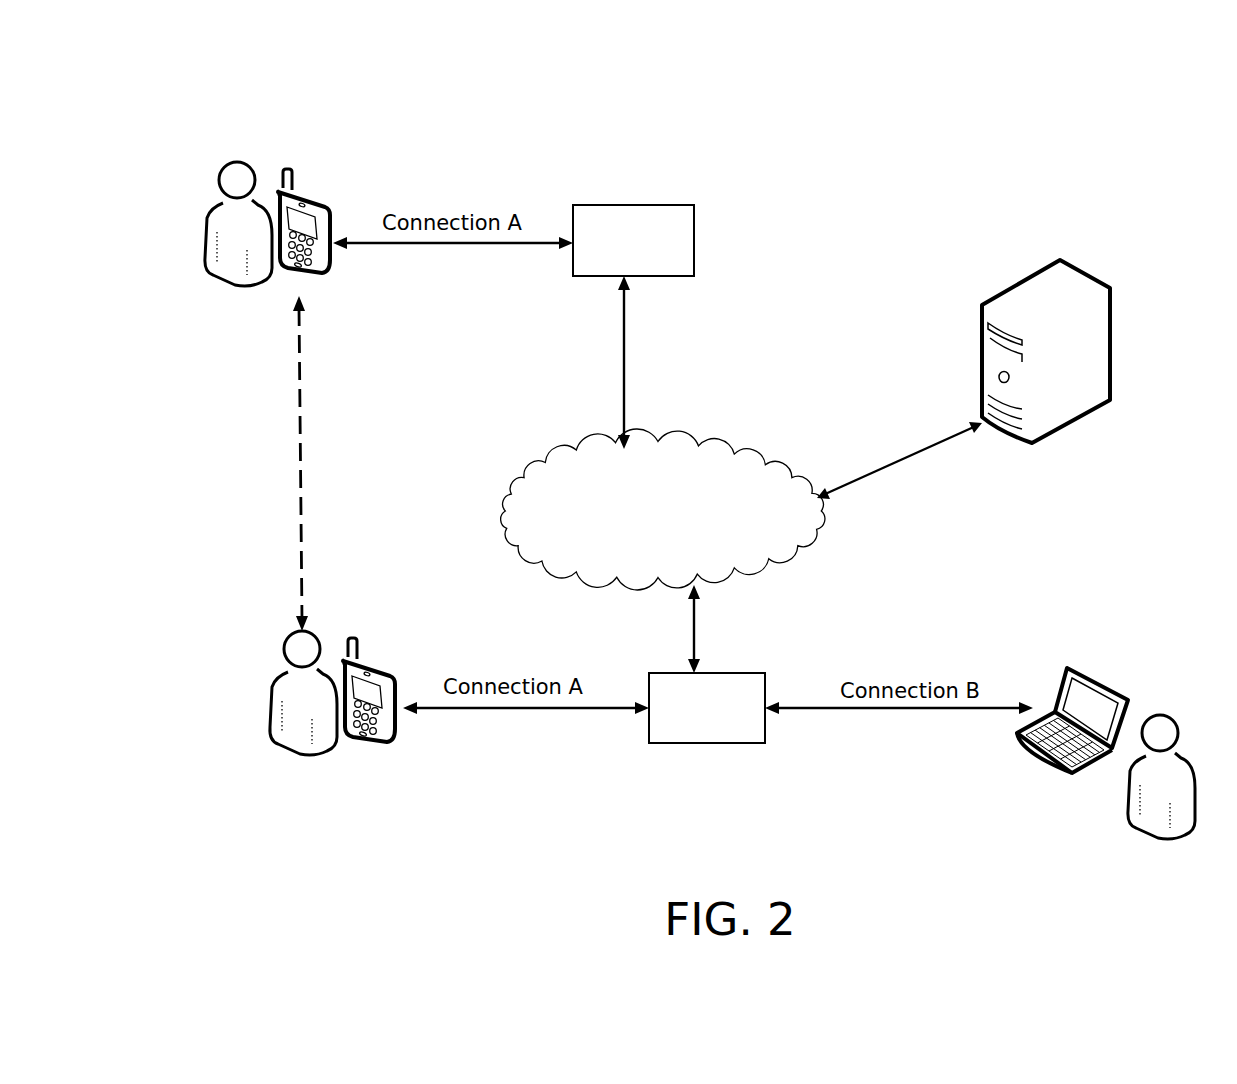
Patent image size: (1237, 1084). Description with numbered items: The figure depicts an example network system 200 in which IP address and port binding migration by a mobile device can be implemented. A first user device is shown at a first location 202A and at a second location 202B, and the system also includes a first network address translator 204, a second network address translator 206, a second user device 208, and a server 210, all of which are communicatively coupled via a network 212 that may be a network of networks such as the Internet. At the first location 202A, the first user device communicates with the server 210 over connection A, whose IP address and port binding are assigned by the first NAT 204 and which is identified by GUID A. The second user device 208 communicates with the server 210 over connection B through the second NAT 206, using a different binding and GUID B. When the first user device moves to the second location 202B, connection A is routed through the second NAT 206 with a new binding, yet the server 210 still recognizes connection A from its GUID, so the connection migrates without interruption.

The network system 200 is at (733, 90).
The first user device at first location 202A is at (292, 170).
The first user device at second location 202B is at (357, 637).
The first network address translator 204 is at (667, 205).
The second network address translator 206 is at (708, 743).
The second user device 208 is at (1068, 667).
The server 210 is at (1061, 259).
The network 212 is at (660, 438).